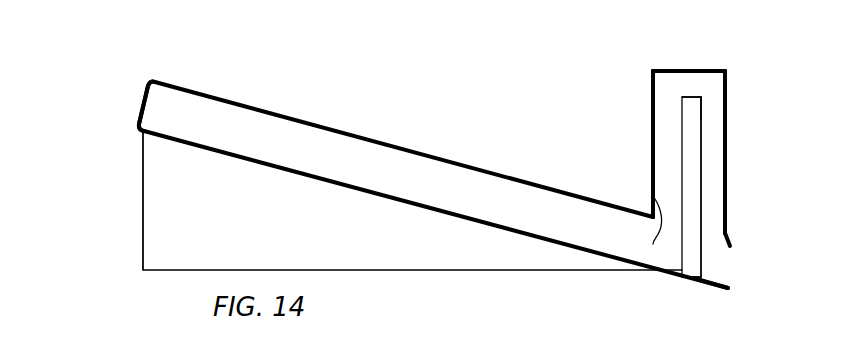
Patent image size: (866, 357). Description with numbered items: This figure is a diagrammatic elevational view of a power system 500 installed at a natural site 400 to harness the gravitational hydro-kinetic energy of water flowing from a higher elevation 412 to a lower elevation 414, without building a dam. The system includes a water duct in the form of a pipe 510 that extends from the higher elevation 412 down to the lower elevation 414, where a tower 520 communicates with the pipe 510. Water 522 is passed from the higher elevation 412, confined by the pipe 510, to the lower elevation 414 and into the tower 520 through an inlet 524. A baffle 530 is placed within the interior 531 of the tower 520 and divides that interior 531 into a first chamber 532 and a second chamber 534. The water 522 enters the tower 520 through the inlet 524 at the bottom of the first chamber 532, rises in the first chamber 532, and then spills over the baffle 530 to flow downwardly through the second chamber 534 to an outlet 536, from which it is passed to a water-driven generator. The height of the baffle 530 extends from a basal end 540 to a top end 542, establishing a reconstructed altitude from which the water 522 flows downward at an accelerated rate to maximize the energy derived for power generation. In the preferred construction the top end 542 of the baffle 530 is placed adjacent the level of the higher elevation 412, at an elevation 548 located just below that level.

The site 400 is at (409, 91).
The higher elevation 412 is at (140, 132).
The lower elevation 414 is at (718, 287).
The power system 500 is at (738, 103).
The pipe 510 is at (256, 107).
The tower 520 is at (726, 162).
The water 522 is at (418, 186).
The inlet 524 is at (654, 197).
The baffle 530 is at (691, 198).
The interior 531 is at (706, 222).
The first chamber 532 is at (666, 128).
The second chamber 534 is at (714, 143).
The outlet 536 is at (726, 258).
The basal end 540 is at (686, 281).
The top end 542 is at (693, 95).
The elevation 548 is at (701, 97).